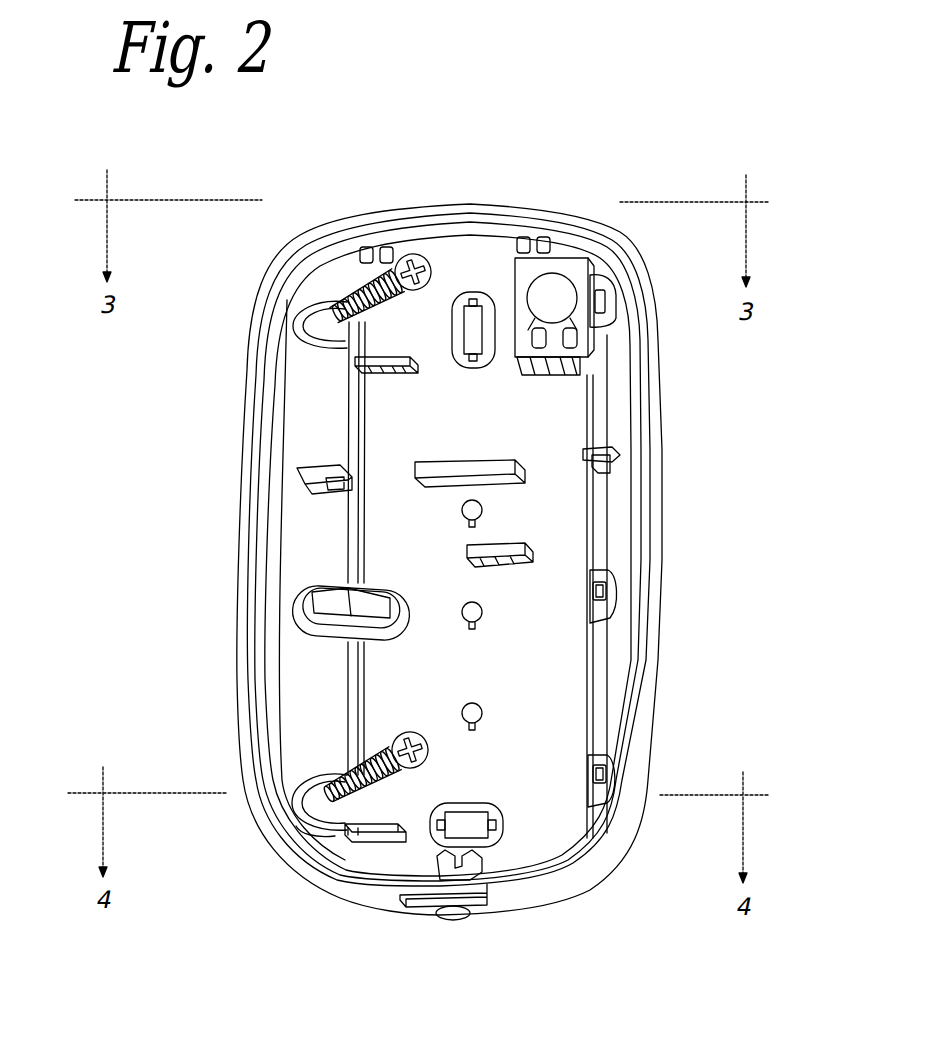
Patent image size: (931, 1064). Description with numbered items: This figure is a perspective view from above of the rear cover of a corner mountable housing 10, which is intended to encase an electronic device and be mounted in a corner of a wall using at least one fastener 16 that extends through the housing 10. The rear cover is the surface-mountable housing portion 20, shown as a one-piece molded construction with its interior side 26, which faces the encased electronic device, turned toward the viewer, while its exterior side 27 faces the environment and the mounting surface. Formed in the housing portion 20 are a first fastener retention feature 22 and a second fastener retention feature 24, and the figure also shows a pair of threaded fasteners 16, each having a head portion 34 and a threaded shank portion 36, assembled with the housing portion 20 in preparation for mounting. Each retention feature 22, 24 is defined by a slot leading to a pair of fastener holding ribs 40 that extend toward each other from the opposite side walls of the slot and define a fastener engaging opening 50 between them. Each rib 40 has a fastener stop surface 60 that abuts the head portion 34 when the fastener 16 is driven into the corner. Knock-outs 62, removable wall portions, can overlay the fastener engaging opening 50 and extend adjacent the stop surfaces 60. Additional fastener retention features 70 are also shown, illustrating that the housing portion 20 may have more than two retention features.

The corner mountable housing 10 is at (680, 378).
The fastener 16 is at (313, 325).
The surface-mountable housing portion 20 is at (652, 447).
The first fastener retention feature 22 is at (312, 316).
The second fastener retention feature 24 is at (313, 822).
The interior side 26 is at (441, 431).
The exterior side 27 is at (503, 893).
The head portion 34 is at (415, 527).
The threaded shank portion 36 is at (370, 297).
The fastener holding rib 40 is at (330, 320).
The fastener engaging opening 50 is at (313, 320).
The fastener stop surface 60 is at (340, 315).
The knock-out 62 is at (578, 370).
The additional fastener retention feature 70 is at (612, 322).